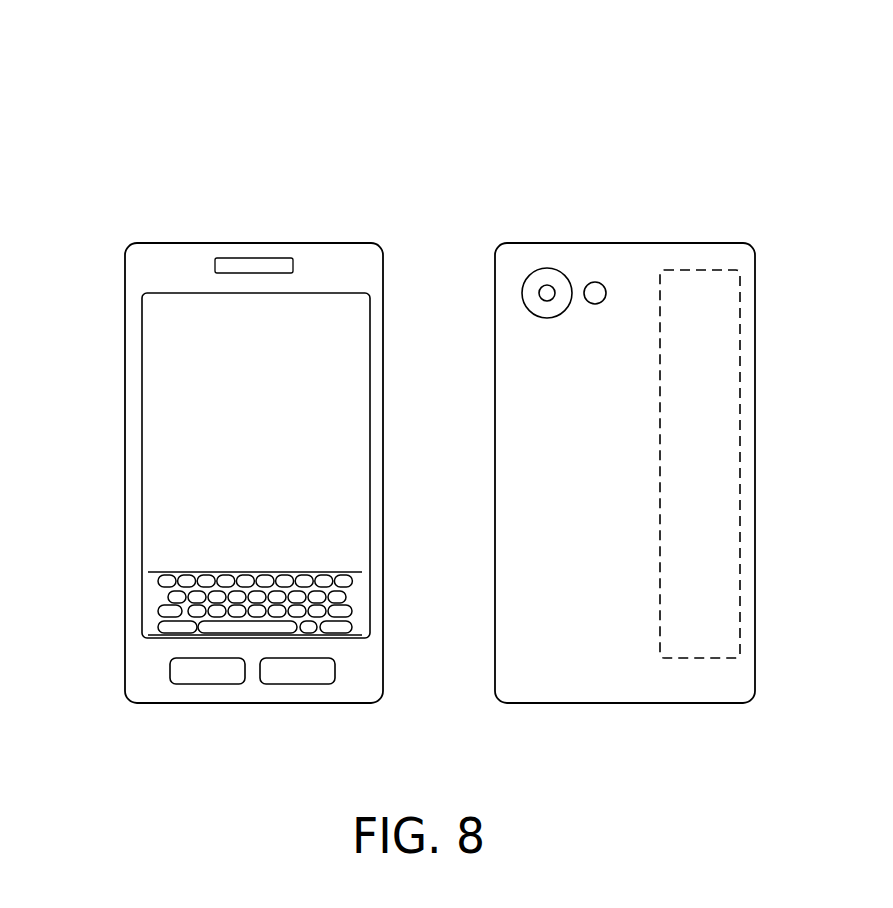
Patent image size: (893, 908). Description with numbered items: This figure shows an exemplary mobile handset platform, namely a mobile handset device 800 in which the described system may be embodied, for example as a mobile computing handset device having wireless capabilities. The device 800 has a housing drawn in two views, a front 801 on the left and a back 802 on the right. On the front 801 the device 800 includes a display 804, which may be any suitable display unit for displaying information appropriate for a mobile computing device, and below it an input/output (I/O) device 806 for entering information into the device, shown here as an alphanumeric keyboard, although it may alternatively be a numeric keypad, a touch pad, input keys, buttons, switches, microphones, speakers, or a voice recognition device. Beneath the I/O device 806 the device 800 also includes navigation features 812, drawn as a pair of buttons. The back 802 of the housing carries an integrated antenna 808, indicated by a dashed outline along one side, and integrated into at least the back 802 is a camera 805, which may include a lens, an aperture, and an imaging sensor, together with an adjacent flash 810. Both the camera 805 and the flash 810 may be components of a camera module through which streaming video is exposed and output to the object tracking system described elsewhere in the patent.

The mobile handset device 800 is at (122, 92).
The front 801 is at (232, 234).
The back 802 is at (547, 232).
The display 804 is at (275, 479).
The camera 805 is at (533, 307).
The input/output (I/O) device 806 is at (150, 598).
The integrated antenna 808 is at (718, 479).
The flash 810 is at (605, 283).
The navigation features 812 is at (185, 675).